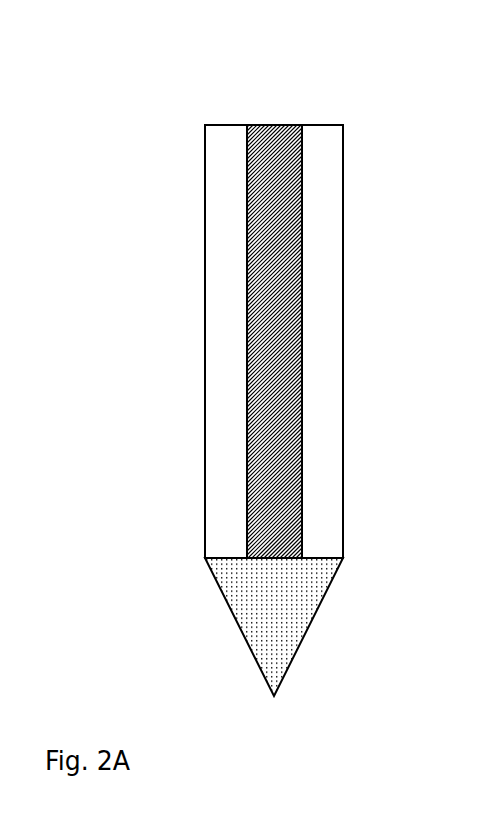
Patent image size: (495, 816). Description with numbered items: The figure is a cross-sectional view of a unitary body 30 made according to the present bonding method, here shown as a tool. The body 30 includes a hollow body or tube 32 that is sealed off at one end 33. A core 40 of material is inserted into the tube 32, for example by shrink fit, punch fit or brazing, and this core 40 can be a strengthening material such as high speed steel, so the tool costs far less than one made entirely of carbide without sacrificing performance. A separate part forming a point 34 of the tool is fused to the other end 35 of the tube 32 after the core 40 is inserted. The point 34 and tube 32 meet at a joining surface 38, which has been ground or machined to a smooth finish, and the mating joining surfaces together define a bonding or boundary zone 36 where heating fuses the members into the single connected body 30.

The unitary body 30 is at (152, 317).
The hollow body or tube 32 is at (322, 250).
The one end 33 is at (323, 125).
The point 34 is at (275, 627).
The other end 35 is at (345, 543).
The bonding or boundary zone 36 is at (217, 552).
The joining surface 38 is at (327, 560).
The core 40 is at (275, 413).